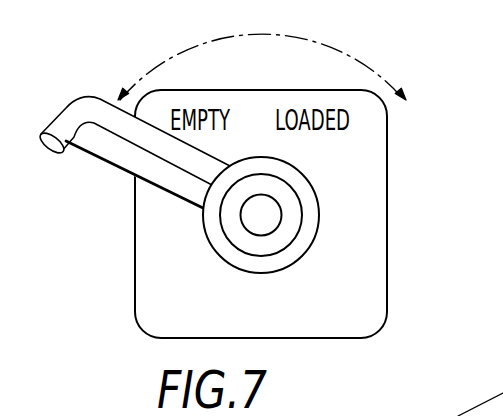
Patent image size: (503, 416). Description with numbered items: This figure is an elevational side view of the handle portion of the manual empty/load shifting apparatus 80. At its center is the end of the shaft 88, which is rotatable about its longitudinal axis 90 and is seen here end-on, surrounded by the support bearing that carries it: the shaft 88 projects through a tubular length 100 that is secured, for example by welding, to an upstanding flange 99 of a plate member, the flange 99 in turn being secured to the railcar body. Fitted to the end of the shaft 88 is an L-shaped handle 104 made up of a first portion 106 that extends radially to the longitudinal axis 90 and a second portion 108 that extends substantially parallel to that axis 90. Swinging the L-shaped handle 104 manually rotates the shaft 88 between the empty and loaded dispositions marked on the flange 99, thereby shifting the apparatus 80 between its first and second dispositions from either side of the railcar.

The manual empty/load shifting apparatus 80 is at (403, 153).
The shaft 88 is at (302, 209).
The longitudinal axis 90 is at (275, 200).
The upstanding flange 99 is at (377, 277).
The tubular length 100 is at (231, 266).
The L-shaped handle 104 is at (134, 162).
The first portion 106 is at (127, 188).
The second portion 108 is at (49, 127).